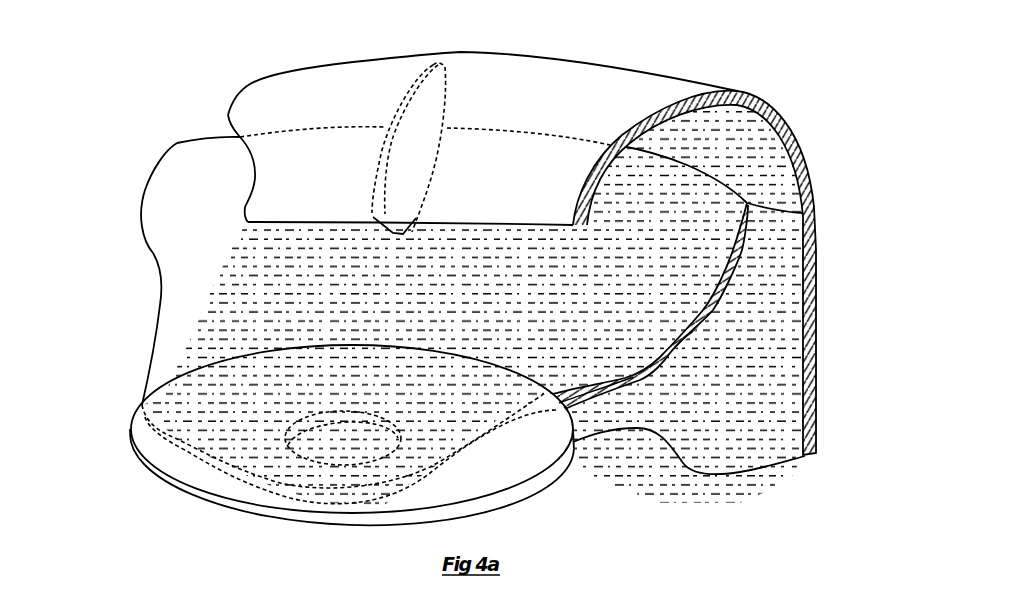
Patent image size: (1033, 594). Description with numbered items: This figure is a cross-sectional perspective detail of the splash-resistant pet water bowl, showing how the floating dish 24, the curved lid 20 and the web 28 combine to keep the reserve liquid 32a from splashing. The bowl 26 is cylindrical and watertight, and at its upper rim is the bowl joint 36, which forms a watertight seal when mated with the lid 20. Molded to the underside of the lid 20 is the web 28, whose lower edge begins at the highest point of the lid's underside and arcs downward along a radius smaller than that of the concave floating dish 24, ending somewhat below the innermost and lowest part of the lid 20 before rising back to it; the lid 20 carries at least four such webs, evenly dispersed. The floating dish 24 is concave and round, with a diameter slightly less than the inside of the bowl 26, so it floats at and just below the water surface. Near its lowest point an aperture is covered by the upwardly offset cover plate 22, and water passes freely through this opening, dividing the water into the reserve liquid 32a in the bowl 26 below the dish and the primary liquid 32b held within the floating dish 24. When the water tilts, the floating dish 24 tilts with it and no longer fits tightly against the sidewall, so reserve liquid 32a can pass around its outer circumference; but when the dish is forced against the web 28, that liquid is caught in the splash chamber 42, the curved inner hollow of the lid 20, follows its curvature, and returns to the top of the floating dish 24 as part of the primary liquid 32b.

The lid 20 is at (807, 177).
The cover plate 22 is at (160, 457).
The floating dish 24 is at (183, 200).
The bowl 26 is at (812, 262).
The web 28 is at (425, 143).
The reserve liquid 32a is at (745, 347).
The primary liquid 32b is at (302, 289).
The bowl joint 36 is at (802, 213).
The splash chamber 42 is at (745, 125).